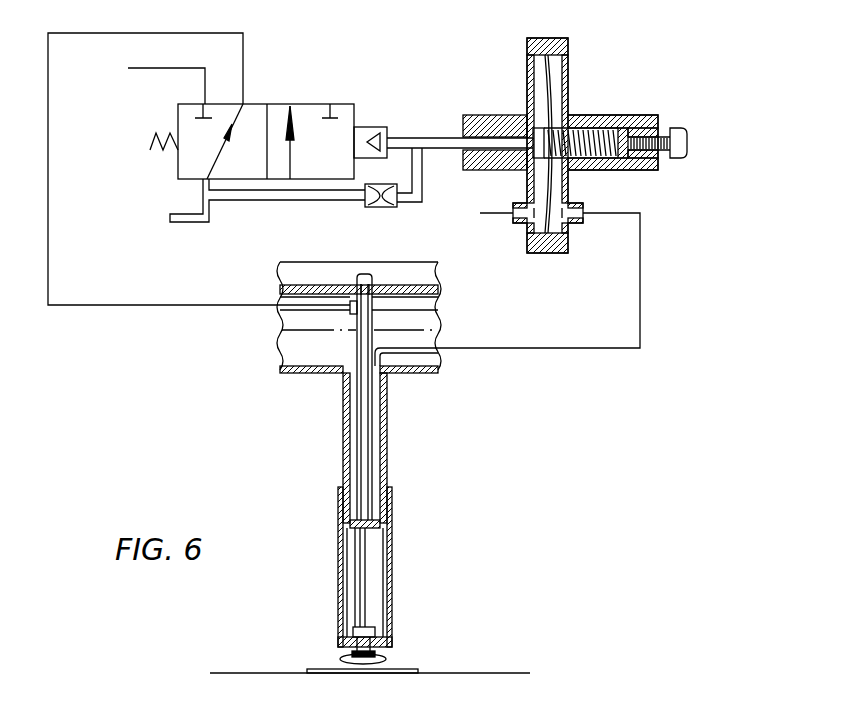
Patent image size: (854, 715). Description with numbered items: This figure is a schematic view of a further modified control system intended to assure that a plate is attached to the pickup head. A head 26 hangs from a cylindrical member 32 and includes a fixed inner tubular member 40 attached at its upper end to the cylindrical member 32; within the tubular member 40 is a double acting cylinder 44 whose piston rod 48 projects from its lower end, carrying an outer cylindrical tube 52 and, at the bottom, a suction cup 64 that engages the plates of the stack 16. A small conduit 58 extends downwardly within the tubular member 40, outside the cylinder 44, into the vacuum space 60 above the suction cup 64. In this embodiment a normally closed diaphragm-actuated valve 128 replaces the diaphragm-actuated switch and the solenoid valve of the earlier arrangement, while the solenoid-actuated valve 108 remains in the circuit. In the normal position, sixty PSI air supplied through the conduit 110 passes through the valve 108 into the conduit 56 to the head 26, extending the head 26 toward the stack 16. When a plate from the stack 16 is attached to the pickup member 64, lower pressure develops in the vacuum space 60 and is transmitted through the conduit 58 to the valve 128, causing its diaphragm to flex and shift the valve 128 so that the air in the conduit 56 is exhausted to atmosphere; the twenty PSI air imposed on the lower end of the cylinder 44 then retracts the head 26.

The solenoid-actuated valve 108 is at (272, 104).
The conduit 110 is at (192, 222).
The conduit 56 is at (146, 305).
The diaphragm-actuated valve 128 is at (596, 66).
The cylindrical member 32 is at (318, 374).
The small conduit 58 is at (432, 352).
The fixed inner tubular member 40 is at (387, 433).
The double acting cylinder 44 is at (362, 455).
The head 26 is at (413, 503).
The outer cylindrical tube 52 is at (392, 552).
The piston rod 48 is at (362, 566).
The vacuum space 60 is at (378, 594).
The suction cup 64 is at (385, 660).
The battery plate stack 16 is at (410, 669).